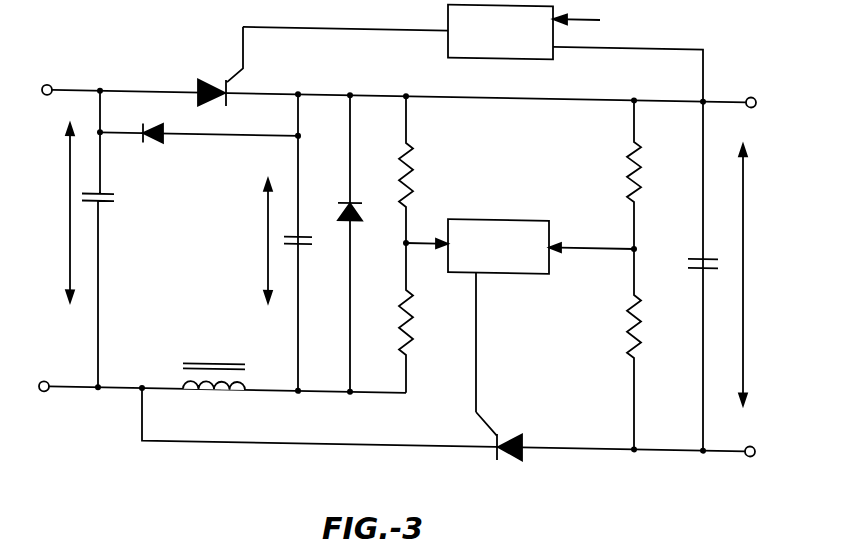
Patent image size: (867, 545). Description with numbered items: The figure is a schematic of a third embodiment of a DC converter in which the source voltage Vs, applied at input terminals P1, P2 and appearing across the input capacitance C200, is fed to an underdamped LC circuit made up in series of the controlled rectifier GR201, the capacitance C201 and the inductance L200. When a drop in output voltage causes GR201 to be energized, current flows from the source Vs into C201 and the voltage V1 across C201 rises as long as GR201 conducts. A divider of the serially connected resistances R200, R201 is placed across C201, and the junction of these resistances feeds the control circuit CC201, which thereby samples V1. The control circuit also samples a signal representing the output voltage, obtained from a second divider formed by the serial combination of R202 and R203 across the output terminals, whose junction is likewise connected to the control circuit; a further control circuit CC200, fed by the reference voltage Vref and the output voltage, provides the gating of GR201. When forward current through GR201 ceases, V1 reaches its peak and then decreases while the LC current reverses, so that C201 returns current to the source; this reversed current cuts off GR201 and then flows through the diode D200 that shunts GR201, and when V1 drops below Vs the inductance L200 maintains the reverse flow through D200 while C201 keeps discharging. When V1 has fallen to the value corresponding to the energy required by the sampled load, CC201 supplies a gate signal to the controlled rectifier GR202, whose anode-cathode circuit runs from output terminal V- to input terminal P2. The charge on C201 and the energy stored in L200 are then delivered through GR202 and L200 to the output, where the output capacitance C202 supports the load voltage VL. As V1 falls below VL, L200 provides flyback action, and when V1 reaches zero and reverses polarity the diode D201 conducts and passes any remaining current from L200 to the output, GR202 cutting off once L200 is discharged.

The input terminal P1 is at (36, 101).
The input terminal P2 is at (34, 397).
The output terminal V- is at (756, 464).
The capacitance C200 is at (111, 239).
The diode D200 is at (199, 257).
The controlled rectifier GR201 is at (209, 66).
The capacitance C201 is at (308, 181).
The diode D201 is at (363, 243).
The resistance R200 is at (424, 170).
The resistance R201 is at (423, 318).
The control circuit CC200 is at (500, 32).
The control circuit CC201 is at (520, 316).
The resistance R202 is at (651, 174).
The resistance R203 is at (651, 349).
The output capacitance C202 is at (690, 253).
The inductance L200 is at (214, 391).
The controlled rectifier GR202 is at (516, 454).
The reference voltage Vref is at (594, 23).
The DC source voltage Vs is at (64, 212).
The voltage across C201 V1 is at (263, 241).
The load voltage VL is at (739, 274).